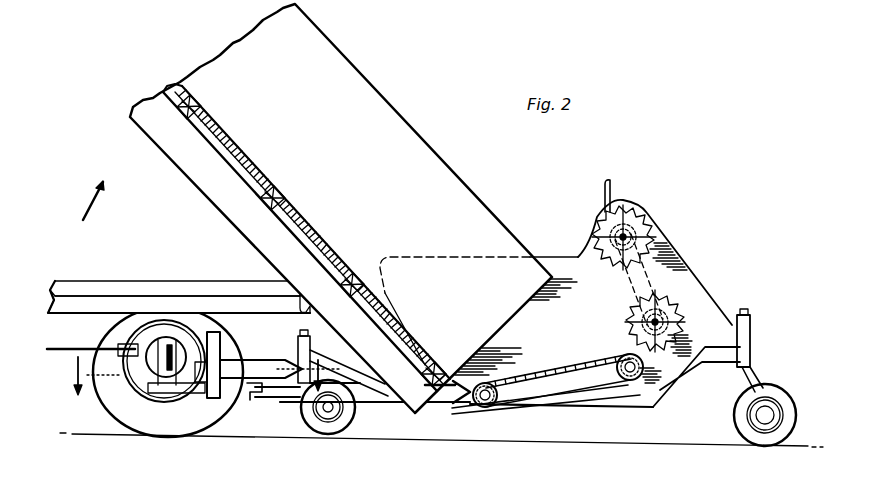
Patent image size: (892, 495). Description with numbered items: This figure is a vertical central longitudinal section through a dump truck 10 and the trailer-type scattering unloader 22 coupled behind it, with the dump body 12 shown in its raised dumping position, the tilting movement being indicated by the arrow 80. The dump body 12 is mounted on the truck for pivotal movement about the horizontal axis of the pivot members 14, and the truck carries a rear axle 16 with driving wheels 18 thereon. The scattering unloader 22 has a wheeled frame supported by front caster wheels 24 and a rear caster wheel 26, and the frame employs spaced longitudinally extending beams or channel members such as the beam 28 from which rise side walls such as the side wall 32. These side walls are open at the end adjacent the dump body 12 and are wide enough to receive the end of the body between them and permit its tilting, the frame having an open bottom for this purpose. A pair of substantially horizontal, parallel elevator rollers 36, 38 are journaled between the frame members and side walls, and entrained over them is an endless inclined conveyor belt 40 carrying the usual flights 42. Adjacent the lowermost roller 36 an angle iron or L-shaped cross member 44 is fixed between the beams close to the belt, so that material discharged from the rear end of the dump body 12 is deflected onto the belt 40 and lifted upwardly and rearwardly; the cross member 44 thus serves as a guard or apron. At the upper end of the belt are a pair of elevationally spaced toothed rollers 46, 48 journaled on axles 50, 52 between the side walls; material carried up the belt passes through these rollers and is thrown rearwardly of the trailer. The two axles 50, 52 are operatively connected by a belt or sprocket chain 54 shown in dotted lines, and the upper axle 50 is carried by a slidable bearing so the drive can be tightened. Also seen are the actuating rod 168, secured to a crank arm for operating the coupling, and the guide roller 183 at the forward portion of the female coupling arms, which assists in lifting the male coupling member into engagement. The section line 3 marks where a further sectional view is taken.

The dump truck 10 is at (71, 247).
The dump body 12 is at (400, 143).
The pivot members 14 is at (307, 304).
The rear axle 16 is at (150, 350).
The driving wheels 18 is at (200, 413).
The scattering unloader 22 is at (680, 221).
The front caster wheels 24 is at (335, 418).
The rear caster wheel 26 is at (742, 417).
The beam or channel member 28 is at (388, 393).
The side wall 32 is at (568, 275).
The lowermost elevator roller 36 is at (497, 405).
The elevator roller 38 is at (635, 378).
The endless inclined conveyor belt 40 is at (553, 407).
The flights 42 is at (570, 362).
The angle iron cross member 44 is at (463, 403).
The upper toothed roller 46 is at (638, 214).
The lower toothed roller 48 is at (682, 315).
The upper axle 50 is at (620, 241).
The lower axle 52 is at (648, 322).
The belt or sprocket chain 54 is at (686, 263).
The arrow 80 is at (83, 205).
The actuating rod 168 is at (67, 350).
The guide roller 183 is at (250, 397).
The section line 3 is at (194, 368).